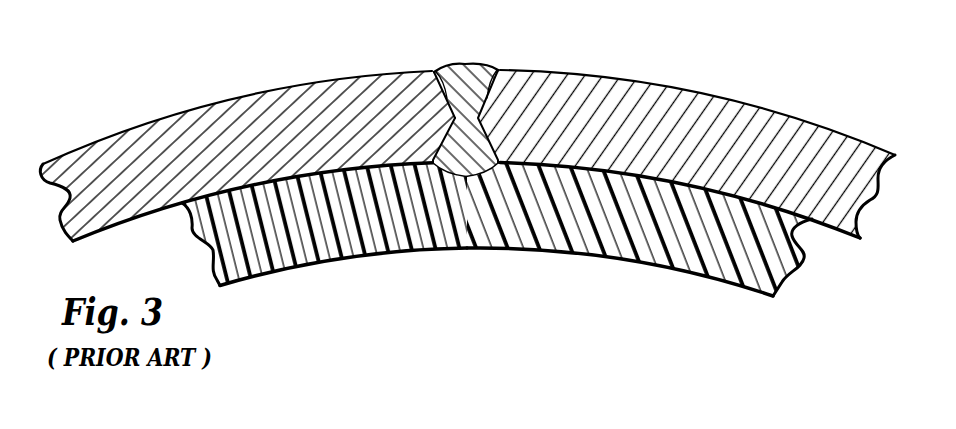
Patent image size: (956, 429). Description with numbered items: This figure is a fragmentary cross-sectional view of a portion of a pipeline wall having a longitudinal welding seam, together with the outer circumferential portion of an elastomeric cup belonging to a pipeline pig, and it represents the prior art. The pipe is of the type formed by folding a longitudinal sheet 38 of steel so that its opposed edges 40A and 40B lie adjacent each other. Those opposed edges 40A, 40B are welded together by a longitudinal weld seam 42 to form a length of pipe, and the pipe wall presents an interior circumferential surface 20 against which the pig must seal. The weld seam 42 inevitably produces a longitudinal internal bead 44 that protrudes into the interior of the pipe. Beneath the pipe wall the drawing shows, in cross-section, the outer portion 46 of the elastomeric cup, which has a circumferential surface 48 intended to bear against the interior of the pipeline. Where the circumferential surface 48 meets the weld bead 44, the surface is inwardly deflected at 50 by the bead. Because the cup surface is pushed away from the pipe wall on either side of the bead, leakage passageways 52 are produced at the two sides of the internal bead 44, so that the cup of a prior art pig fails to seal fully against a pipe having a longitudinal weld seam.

The interior circumferential surface 20 is at (150, 213).
The longitudinal sheet 38 is at (187, 157).
The opposed edge 40A is at (443, 78).
The opposed edge 40B is at (490, 80).
The longitudinal weld seam 42 is at (468, 77).
The longitudinal internal bead 44 is at (465, 177).
The outer portion 46 is at (728, 240).
The circumferential surface 48 is at (302, 171).
The inward deflection 50 is at (423, 161).
The leakage passageways 52 is at (430, 172).